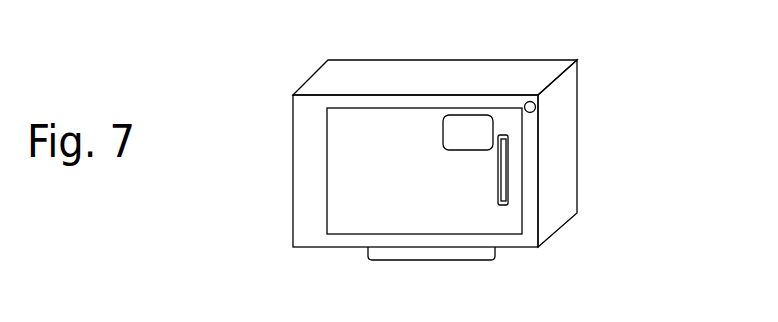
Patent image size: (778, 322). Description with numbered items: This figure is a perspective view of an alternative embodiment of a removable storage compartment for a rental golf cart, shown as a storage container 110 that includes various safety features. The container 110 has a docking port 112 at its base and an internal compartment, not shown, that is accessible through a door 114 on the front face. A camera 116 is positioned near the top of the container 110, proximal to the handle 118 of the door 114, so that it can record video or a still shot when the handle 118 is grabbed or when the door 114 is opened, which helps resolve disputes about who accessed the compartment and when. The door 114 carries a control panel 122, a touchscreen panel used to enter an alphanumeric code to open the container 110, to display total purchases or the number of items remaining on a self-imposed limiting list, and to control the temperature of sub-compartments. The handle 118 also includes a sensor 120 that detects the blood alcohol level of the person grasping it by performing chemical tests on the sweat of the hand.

The storage container 110 is at (220, 210).
The docking port 112 is at (390, 261).
The door 114 is at (411, 212).
The camera 116 is at (537, 106).
The handle 118 is at (505, 191).
The sensor 120 is at (505, 163).
The control panel 122 is at (479, 122).